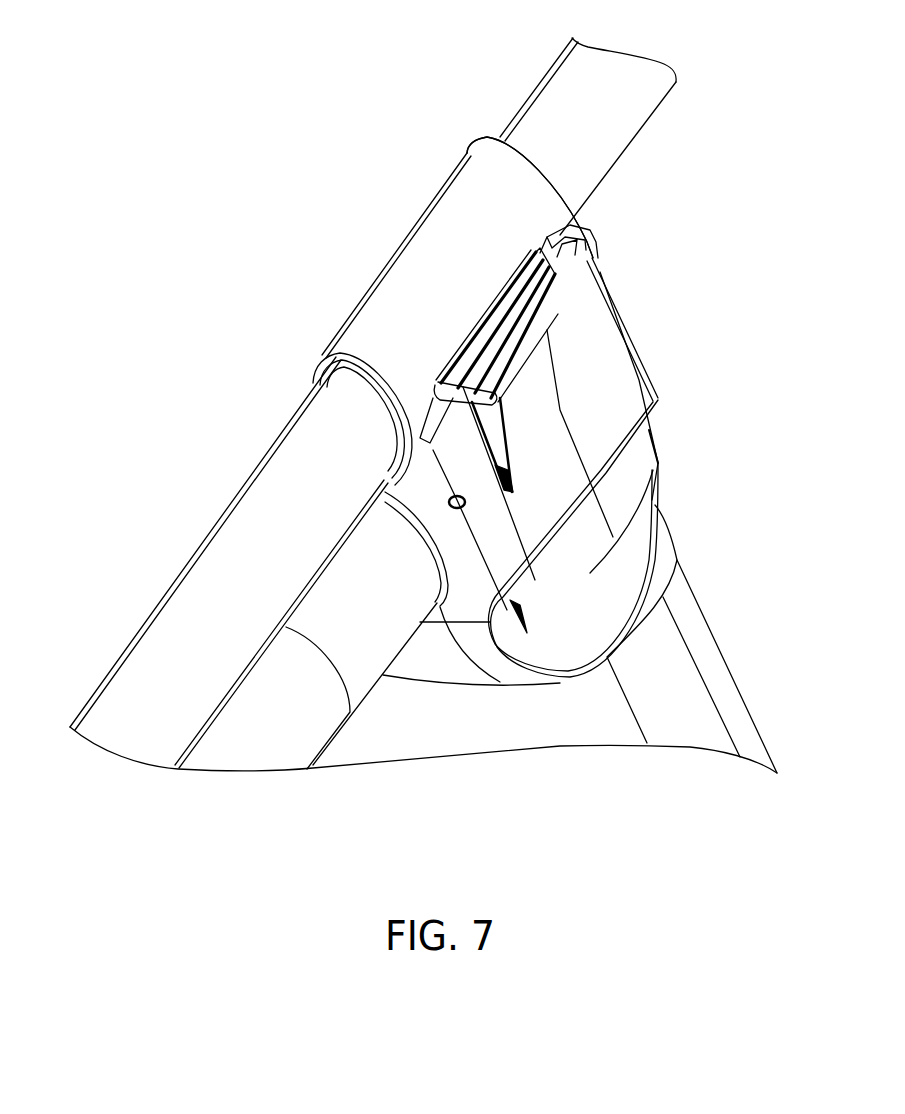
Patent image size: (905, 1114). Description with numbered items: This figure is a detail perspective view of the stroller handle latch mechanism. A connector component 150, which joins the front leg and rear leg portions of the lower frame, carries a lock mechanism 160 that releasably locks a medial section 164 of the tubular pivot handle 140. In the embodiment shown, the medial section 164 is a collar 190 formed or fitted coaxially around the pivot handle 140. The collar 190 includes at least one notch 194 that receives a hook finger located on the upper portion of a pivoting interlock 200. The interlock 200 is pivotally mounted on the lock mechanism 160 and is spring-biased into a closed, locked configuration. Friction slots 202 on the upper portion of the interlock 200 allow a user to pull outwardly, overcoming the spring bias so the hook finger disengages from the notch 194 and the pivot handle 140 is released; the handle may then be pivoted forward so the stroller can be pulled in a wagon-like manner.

The pivot handle 140 is at (645, 98).
The connector component 150 is at (672, 436).
The lock mechanism 160 is at (629, 266).
The medial section 164 is at (415, 146).
The collar 190 is at (530, 193).
The notch 194 is at (460, 350).
The pivoting interlock 200 is at (570, 350).
The friction slots 202 is at (567, 288).